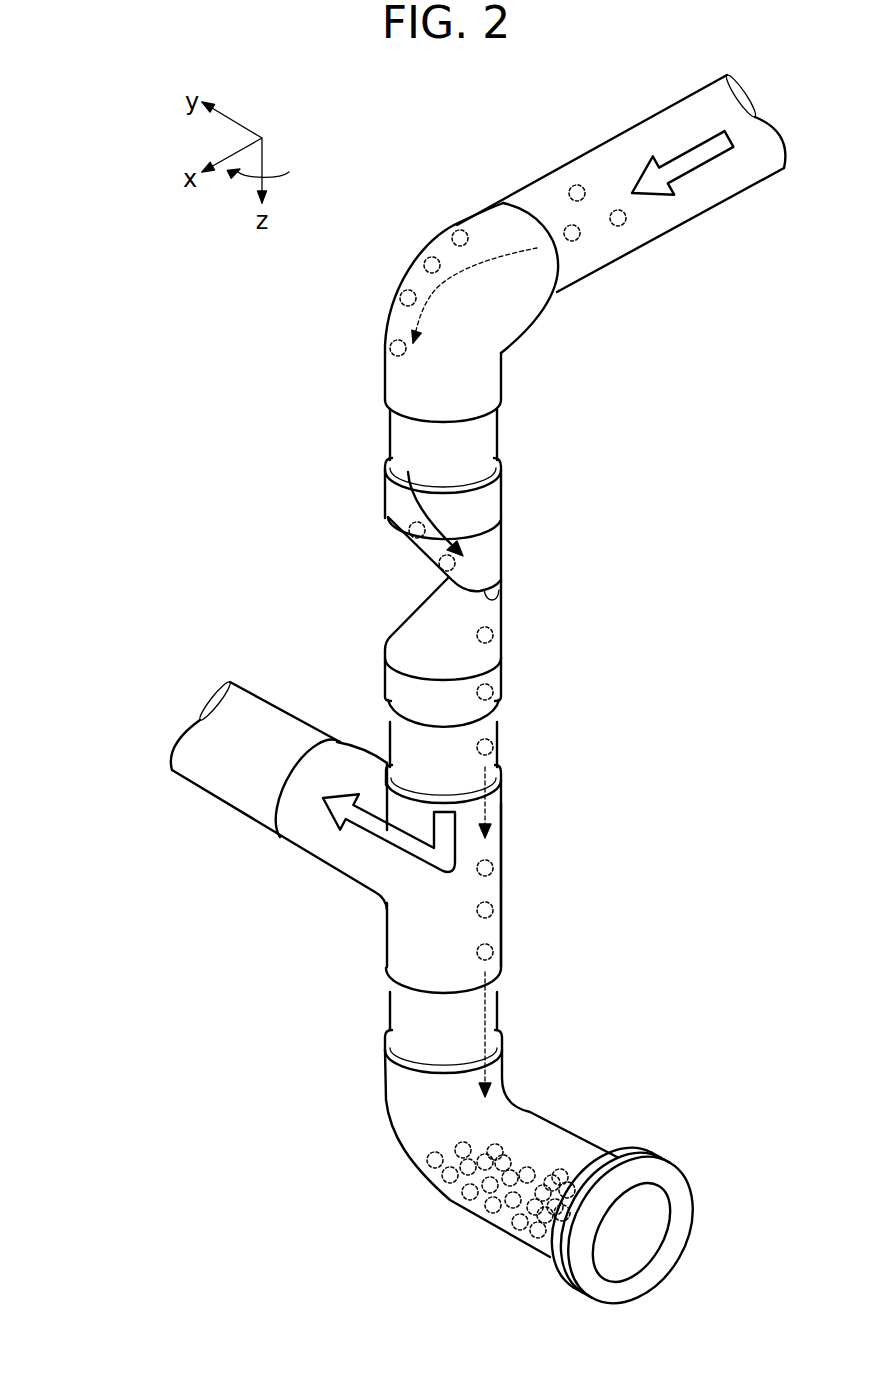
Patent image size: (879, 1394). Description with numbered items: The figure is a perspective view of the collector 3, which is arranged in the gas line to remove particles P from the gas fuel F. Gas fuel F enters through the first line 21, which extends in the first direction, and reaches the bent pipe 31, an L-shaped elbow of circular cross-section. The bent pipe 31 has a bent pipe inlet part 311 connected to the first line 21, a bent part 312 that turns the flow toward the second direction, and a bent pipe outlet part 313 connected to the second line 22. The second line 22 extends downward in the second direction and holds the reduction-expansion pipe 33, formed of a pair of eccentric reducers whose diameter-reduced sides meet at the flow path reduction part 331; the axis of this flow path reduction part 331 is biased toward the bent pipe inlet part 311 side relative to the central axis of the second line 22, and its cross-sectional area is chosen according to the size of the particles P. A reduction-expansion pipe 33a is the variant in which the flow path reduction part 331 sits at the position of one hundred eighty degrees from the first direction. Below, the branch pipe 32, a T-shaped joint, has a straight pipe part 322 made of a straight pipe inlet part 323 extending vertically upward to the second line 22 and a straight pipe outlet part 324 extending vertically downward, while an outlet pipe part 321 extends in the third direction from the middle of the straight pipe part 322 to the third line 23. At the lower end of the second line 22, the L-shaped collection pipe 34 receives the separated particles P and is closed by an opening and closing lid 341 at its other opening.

The collector 3 is at (684, 701).
The first line 21 is at (666, 138).
The second line 22 is at (483, 440).
The third line 23 is at (233, 781).
The bent pipe 31 is at (476, 312).
The bent pipe inlet part 311 is at (537, 280).
The bent part 312 is at (442, 245).
The bent pipe outlet part 313 is at (403, 372).
The branch pipe 32 is at (457, 867).
The outlet pipe part 321 is at (307, 828).
The straight pipe part 322 is at (552, 885).
The straight pipe inlet part 323 is at (495, 820).
The straight pipe outlet part 324 is at (447, 947).
The reduction-expansion pipe 33 is at (498, 592).
The reduction-expansion pipe 33a is at (483, 507).
The flow path reduction part 331 is at (494, 599).
The collection pipe 34 is at (422, 1113).
The opening and closing lid 341 is at (660, 1258).
The particles P is at (575, 186).
The gas fuel F is at (699, 156).